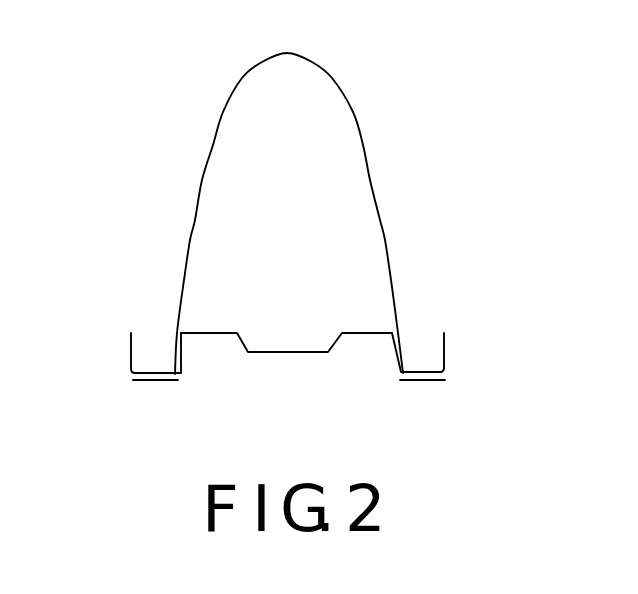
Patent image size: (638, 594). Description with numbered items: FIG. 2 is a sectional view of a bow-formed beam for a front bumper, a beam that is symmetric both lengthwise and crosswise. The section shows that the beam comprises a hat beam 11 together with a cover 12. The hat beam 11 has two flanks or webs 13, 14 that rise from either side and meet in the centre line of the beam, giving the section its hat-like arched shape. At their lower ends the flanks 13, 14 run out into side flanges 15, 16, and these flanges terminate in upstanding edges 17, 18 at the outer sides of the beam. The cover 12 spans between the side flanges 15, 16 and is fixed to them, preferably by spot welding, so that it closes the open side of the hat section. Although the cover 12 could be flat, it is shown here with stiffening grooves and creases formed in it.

The hat beam 11 is at (291, 209).
The cover 12 is at (288, 352).
The flank 13 is at (372, 187).
The flank 14 is at (202, 175).
The side flange 15 is at (420, 372).
The side flange 16 is at (152, 373).
The upstanding edge 17 is at (446, 353).
The upstanding edge 18 is at (127, 348).